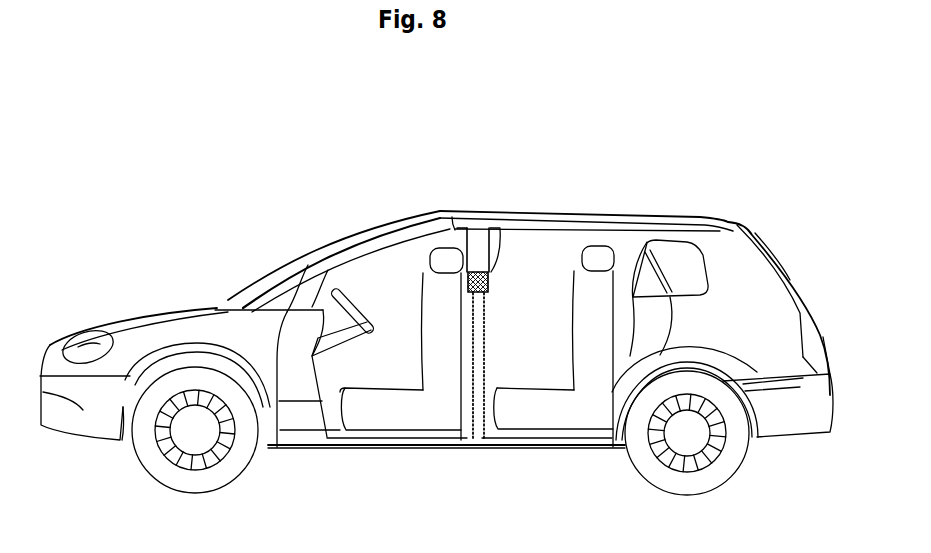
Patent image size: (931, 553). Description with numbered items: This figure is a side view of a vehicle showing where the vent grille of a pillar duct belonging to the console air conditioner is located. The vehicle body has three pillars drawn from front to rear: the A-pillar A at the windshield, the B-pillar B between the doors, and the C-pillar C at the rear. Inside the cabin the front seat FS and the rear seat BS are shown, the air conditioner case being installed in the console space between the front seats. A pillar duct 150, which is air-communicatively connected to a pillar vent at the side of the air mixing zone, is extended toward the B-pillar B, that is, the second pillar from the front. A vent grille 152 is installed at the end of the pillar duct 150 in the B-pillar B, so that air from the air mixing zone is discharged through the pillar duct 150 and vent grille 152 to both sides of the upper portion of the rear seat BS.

The A-pillar A is at (310, 247).
The B-pillar B is at (472, 238).
The C-pillar C is at (708, 252).
The pillar duct 150 is at (488, 308).
The vent grille 152 is at (500, 270).
The front seat FS is at (408, 420).
The rear seat BS is at (550, 415).